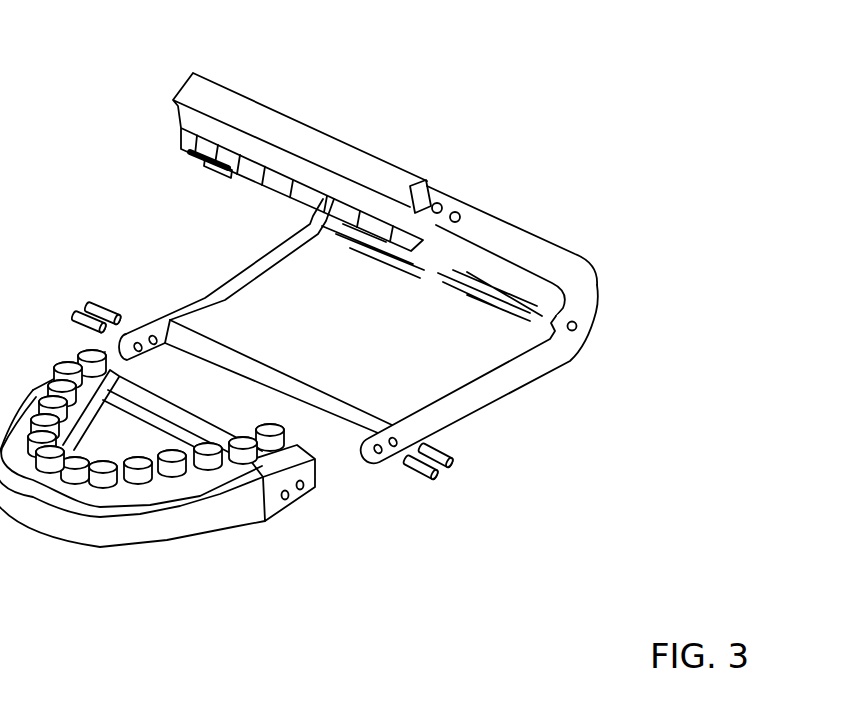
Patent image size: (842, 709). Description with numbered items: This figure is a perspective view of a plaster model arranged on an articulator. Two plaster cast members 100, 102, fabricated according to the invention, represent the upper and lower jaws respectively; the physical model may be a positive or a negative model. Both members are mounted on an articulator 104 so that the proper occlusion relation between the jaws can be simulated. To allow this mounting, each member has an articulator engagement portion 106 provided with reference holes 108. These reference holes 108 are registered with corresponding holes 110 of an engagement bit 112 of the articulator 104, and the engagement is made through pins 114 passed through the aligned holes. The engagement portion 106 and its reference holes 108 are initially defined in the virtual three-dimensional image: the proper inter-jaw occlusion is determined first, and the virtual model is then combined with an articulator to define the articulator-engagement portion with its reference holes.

The plaster cast member 100 is at (228, 113).
The plaster cast member 102 is at (68, 525).
The articulator 104 is at (582, 284).
The articulator engagement portion 106 is at (286, 498).
The reference holes 108 is at (310, 492).
The holes 110 is at (397, 440).
The engagement bit 112 is at (450, 204).
The pins 114 is at (445, 482).